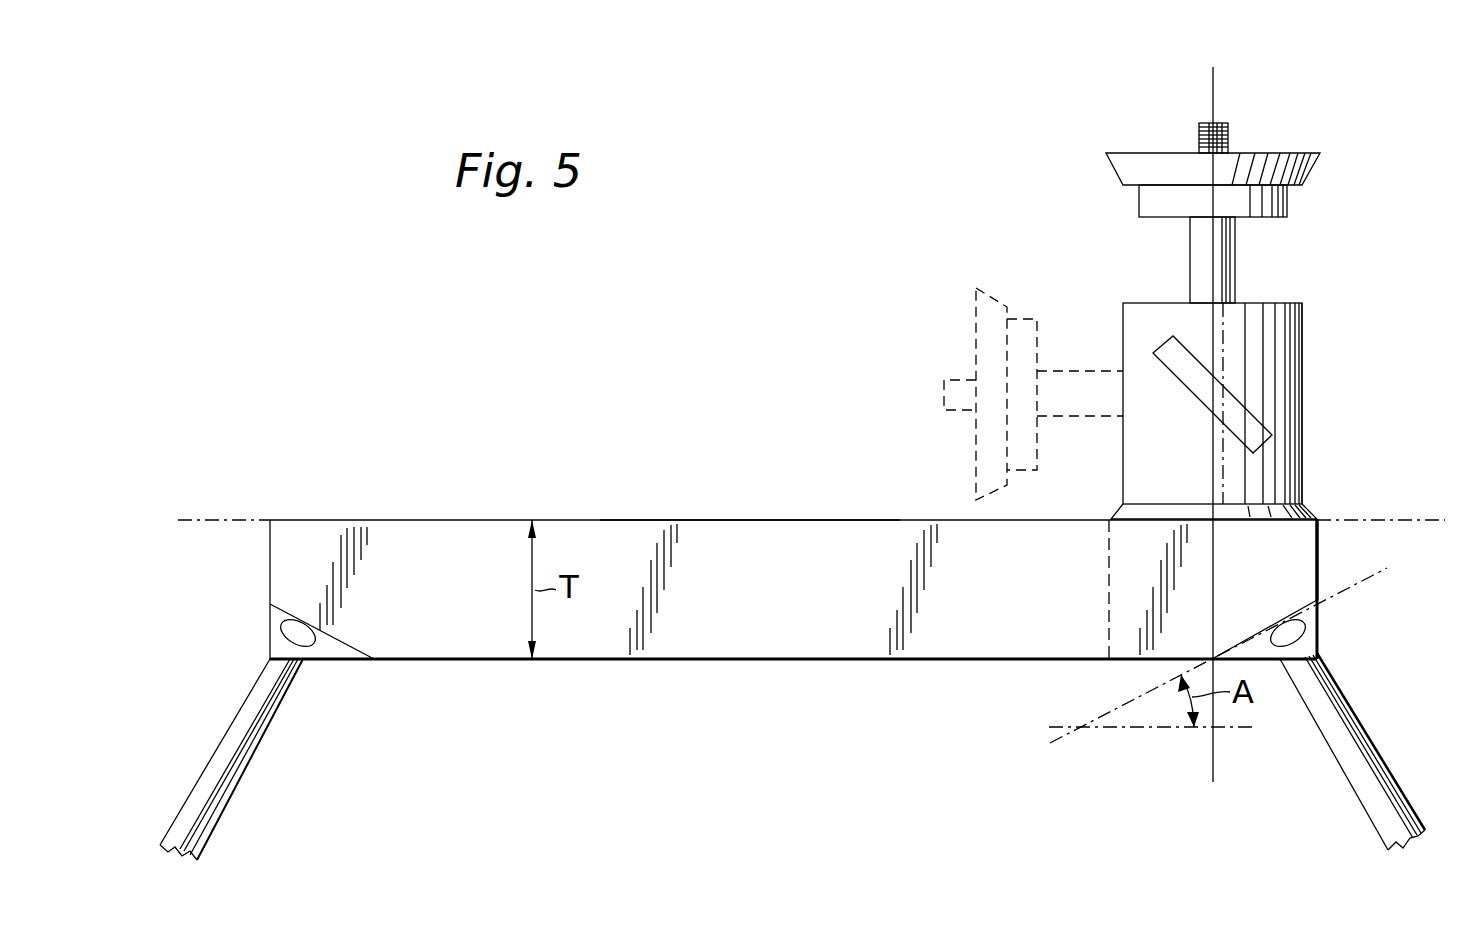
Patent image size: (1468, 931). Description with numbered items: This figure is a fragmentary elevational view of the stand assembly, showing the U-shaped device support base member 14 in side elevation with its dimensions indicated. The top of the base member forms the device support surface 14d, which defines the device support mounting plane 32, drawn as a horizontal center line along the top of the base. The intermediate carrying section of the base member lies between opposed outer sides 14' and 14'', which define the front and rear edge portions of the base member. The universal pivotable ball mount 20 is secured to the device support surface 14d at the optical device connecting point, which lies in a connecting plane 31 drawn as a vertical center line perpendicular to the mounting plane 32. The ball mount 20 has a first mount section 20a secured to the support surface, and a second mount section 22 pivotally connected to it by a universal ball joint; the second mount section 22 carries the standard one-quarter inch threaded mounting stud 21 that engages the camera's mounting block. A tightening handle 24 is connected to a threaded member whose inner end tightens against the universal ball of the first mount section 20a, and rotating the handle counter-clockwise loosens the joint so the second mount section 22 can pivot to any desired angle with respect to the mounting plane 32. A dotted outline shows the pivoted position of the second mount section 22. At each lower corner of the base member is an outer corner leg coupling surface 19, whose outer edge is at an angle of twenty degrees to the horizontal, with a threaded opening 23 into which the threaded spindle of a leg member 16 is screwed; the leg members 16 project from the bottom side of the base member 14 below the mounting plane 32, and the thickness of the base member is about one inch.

The device support base member 14 is at (793, 589).
The device support surface 14d is at (741, 505).
The outer side 14' is at (1083, 558).
The outer side 14'' is at (1357, 559).
The leg member 16 is at (1358, 752).
The outer corner leg coupling surface 19 is at (1318, 630).
The universal pivotable ball mount 20 is at (1315, 327).
The first mount section 20a is at (1282, 472).
The threaded mounting stud 21 is at (1228, 133).
The second mount section 22 is at (1130, 145).
The threaded opening 23 is at (308, 645).
The tightening handle 24 is at (1228, 403).
The connecting plane 31 is at (1198, 81).
The device support mounting plane 32 is at (224, 505).